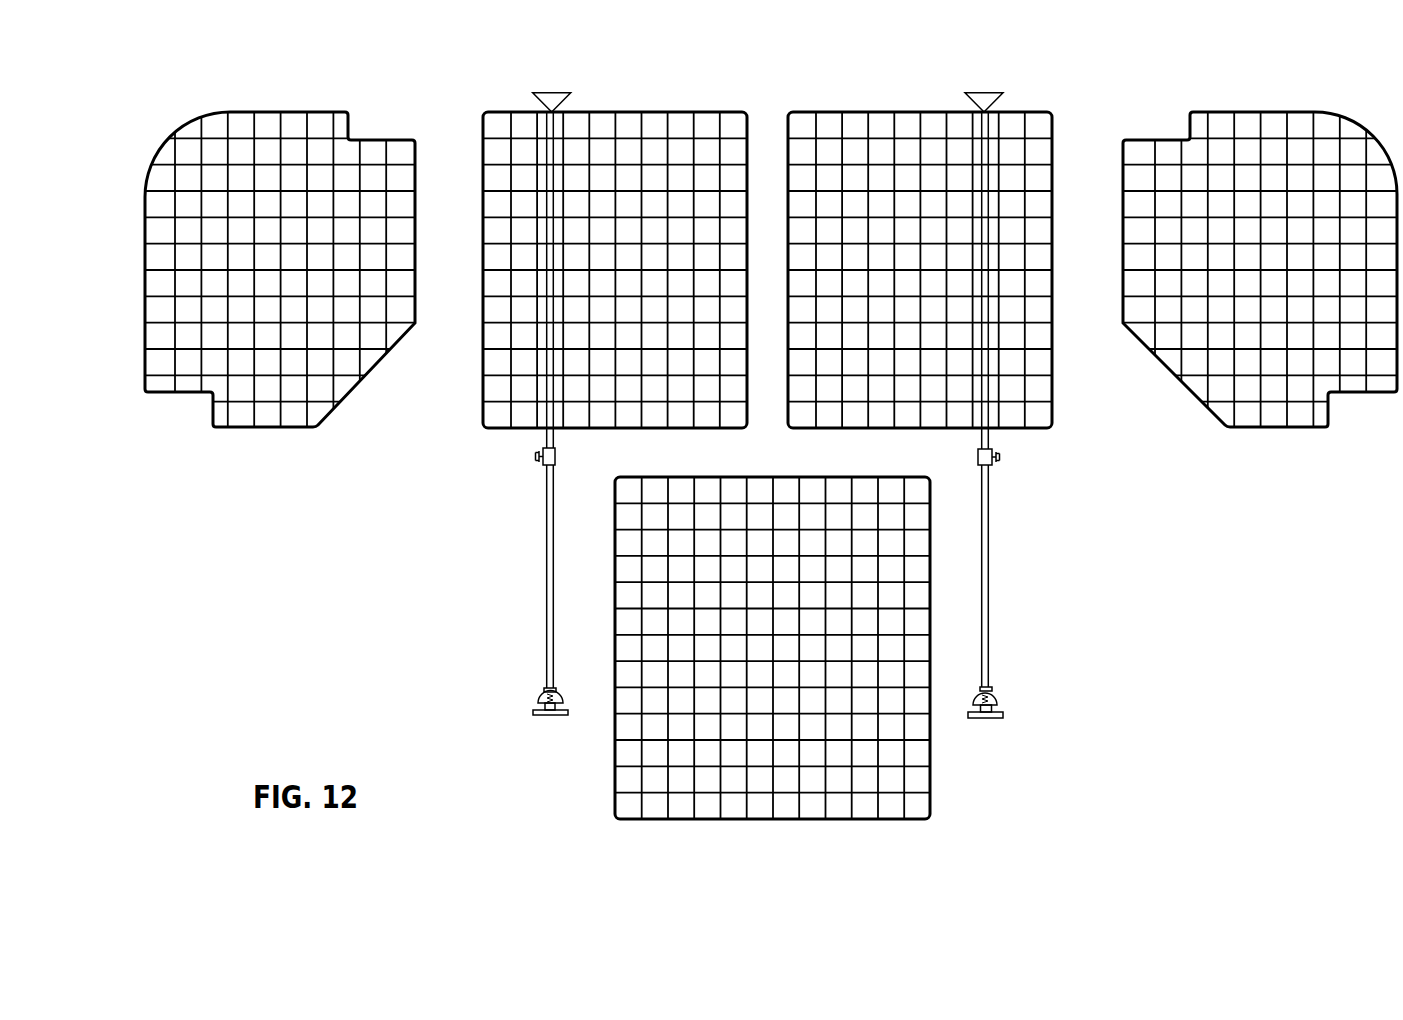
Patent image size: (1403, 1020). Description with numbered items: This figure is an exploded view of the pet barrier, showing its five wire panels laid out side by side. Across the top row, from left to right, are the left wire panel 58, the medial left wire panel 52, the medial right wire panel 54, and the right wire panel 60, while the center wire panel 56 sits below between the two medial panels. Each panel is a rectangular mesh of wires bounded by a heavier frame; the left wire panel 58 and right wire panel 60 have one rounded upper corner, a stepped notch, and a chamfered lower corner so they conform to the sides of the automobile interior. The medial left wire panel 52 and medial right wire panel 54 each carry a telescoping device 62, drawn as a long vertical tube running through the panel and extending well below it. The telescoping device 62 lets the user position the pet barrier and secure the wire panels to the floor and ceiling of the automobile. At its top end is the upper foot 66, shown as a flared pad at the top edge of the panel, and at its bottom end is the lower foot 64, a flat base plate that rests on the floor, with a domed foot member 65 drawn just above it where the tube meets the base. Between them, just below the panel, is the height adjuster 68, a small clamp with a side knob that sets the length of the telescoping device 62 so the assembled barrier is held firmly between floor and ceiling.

The medial left wire panel 52 is at (657, 110).
The medial right wire panel 54 is at (883, 110).
The center wire panel 56 is at (932, 775).
The left wire panel 58 is at (295, 110).
The right wire panel 60 is at (1248, 108).
The telescoping device 62 is at (1000, 524).
The lower foot 64 is at (1003, 728).
The foot 65 is at (1002, 684).
The upper foot 66 is at (997, 82).
The height adjuster 68 is at (1014, 454).